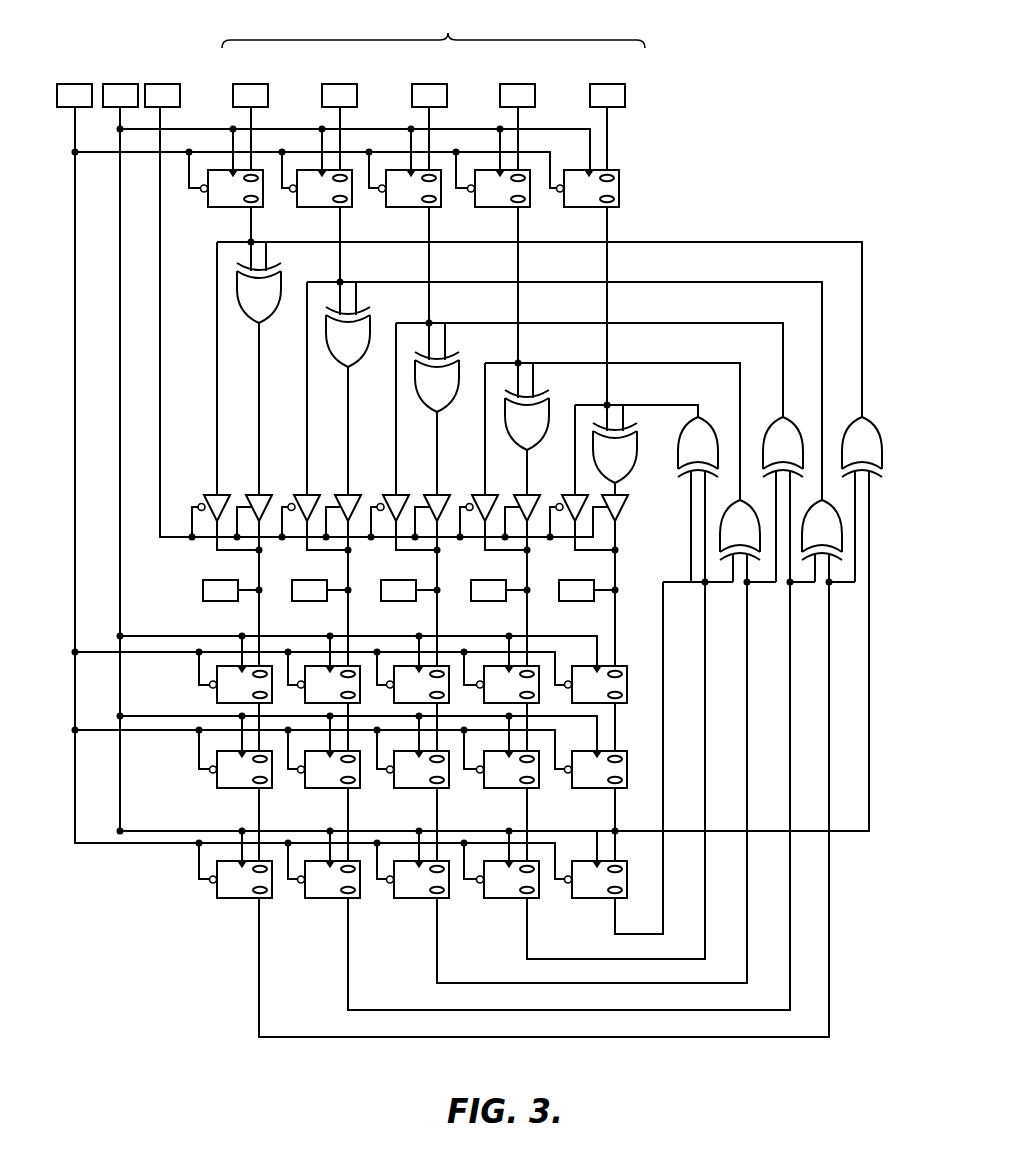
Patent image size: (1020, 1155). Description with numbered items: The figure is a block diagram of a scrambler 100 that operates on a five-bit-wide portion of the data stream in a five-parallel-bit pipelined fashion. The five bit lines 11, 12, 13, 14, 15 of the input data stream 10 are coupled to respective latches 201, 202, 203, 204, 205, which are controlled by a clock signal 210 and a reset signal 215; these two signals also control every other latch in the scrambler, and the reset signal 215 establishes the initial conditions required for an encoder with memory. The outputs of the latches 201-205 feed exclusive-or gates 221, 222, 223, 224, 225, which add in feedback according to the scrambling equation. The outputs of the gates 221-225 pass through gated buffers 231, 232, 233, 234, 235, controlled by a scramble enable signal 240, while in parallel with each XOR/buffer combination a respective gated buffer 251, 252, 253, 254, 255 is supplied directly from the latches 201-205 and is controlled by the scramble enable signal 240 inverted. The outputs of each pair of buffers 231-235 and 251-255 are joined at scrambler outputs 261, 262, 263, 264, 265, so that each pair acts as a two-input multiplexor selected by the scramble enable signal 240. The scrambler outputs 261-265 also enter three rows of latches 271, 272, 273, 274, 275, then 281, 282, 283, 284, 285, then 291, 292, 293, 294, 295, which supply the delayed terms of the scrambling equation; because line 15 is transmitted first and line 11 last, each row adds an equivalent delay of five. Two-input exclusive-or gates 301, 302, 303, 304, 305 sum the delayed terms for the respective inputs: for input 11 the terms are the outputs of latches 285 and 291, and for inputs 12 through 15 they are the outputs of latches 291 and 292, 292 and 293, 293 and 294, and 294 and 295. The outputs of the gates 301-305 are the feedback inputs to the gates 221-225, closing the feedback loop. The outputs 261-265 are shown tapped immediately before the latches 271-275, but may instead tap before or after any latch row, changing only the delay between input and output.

The input data stream 10 is at (433, 30).
The bit line 11 is at (252, 84).
The bit line 12 is at (345, 84).
The bit line 13 is at (432, 84).
The bit line 14 is at (517, 84).
The bit line 15 is at (608, 84).
The scrambler 100 is at (133, 931).
The clock signal 210 is at (116, 84).
The reset signal 215 is at (70, 84).
The scramble enable signal 240 is at (158, 84).
The latch 201 is at (214, 207).
The latch 202 is at (303, 207).
The latch 203 is at (392, 207).
The latch 204 is at (481, 207).
The latch 205 is at (570, 207).
The exclusive-or gate 221 is at (275, 316).
The exclusive-or gate 222 is at (366, 356).
The exclusive-or gate 223 is at (455, 402).
The exclusive-or gate 224 is at (548, 396).
The exclusive-or gate 225 is at (642, 432).
The gated buffer 231 is at (251, 495).
The gated buffer 232 is at (344, 495).
The gated buffer 233 is at (433, 495).
The gated buffer 234 is at (523, 495).
The gated buffer 235 is at (626, 495).
The gated buffer 251 is at (210, 495).
The gated buffer 252 is at (299, 495).
The gated buffer 253 is at (389, 495).
The gated buffer 254 is at (478, 495).
The gated buffer 255 is at (567, 495).
The scrambler output 261 is at (212, 601).
The scrambler output 262 is at (304, 601).
The scrambler output 263 is at (394, 601).
The scrambler output 264 is at (484, 601).
The scrambler output 265 is at (574, 601).
The latch 271 is at (209, 686).
The latch 272 is at (329, 684).
The latch 273 is at (418, 684).
The latch 274 is at (508, 684).
The latch 275 is at (636, 664).
The latch 281 is at (214, 789).
The latch 282 is at (305, 789).
The latch 283 is at (395, 789).
The latch 284 is at (485, 789).
The latch 285 is at (575, 789).
The latch 291 is at (228, 899).
The latch 292 is at (316, 899).
The latch 293 is at (405, 899).
The latch 294 is at (498, 899).
The latch 295 is at (584, 899).
The two-input exclusive-or gate 301 is at (884, 430).
The two-input exclusive-or gate 302 is at (842, 535).
The two-input exclusive-or gate 303 is at (797, 428).
The two-input exclusive-or gate 304 is at (718, 540).
The two-input exclusive-or gate 305 is at (710, 417).